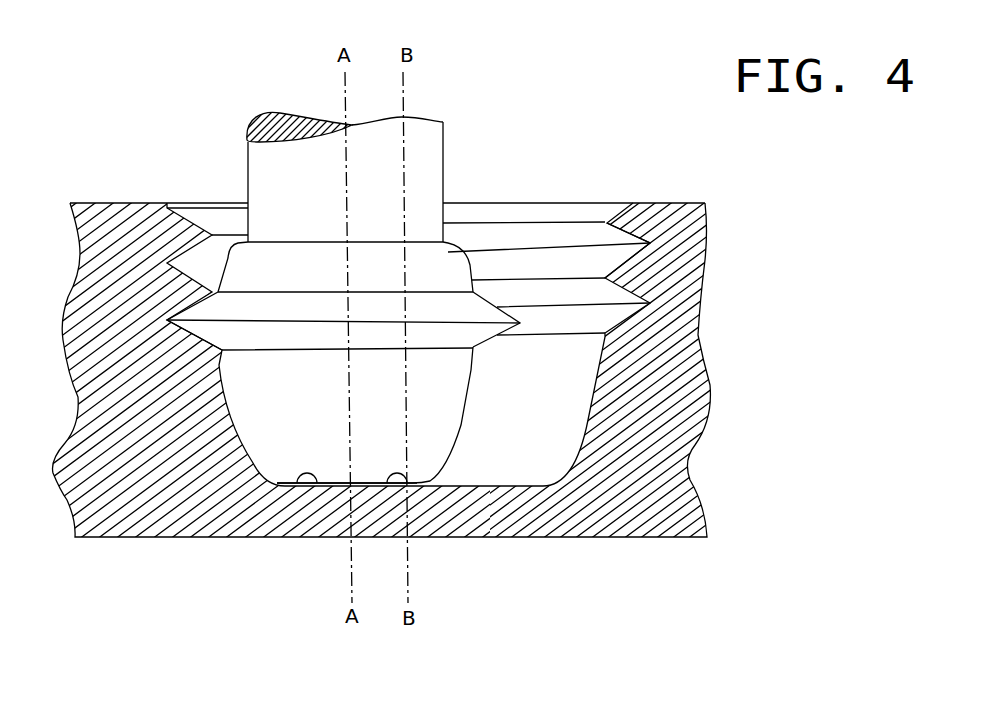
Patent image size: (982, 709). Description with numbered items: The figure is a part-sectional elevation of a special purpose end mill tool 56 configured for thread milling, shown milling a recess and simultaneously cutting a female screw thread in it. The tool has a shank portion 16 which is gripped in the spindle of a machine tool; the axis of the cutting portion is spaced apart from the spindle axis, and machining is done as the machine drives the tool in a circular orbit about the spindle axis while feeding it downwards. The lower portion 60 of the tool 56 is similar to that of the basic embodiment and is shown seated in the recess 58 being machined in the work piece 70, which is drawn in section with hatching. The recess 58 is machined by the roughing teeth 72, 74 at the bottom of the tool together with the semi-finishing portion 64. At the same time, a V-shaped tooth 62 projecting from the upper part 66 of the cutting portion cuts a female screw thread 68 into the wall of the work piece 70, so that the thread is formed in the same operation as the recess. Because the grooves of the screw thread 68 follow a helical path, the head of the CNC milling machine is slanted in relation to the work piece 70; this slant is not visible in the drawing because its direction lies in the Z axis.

The shank portion 16 is at (273, 162).
The end mill tool 56 is at (330, 301).
The recess 58 is at (587, 427).
The lower portion 60 is at (330, 368).
The V-shaped tooth 62 is at (212, 315).
The semi-finishing portion 64 is at (440, 457).
The upper part 66 is at (473, 262).
The female screw thread 68 is at (579, 228).
The work piece 70 is at (491, 328).
The roughing tooth 72 is at (312, 488).
The roughing tooth 74 is at (392, 487).